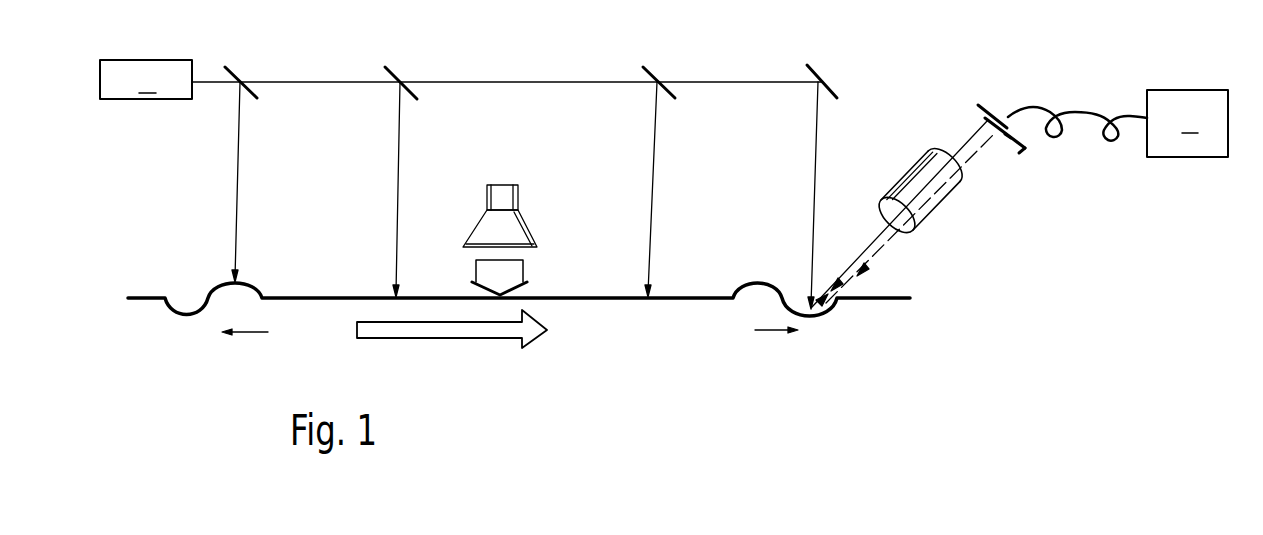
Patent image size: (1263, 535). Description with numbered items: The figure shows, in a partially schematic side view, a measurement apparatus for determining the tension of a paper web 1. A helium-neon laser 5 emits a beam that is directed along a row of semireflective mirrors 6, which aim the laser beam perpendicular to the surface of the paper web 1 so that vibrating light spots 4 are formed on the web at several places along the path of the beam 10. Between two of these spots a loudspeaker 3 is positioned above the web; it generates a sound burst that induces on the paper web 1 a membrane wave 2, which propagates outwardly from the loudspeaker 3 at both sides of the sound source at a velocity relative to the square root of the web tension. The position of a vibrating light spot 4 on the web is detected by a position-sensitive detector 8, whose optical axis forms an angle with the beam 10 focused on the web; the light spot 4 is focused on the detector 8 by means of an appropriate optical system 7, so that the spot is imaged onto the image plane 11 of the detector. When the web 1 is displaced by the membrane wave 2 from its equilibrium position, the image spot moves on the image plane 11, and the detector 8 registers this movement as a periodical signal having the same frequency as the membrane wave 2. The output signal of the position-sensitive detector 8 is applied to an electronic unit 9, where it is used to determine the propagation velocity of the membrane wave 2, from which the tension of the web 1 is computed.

The paper web 1 is at (620, 298).
The membrane wave 2 is at (246, 272).
The loudspeaker 3 is at (512, 200).
The vibrating light spots 4 is at (230, 280).
The helium-neon laser 5 is at (48, 116).
The mirrors 6 is at (236, 72).
The optical system 7 is at (940, 210).
The position-sensitive detector 8 is at (989, 103).
The electronic unit 9 is at (1095, 183).
The beam 10 is at (816, 156).
The image plane 11 is at (1005, 132).